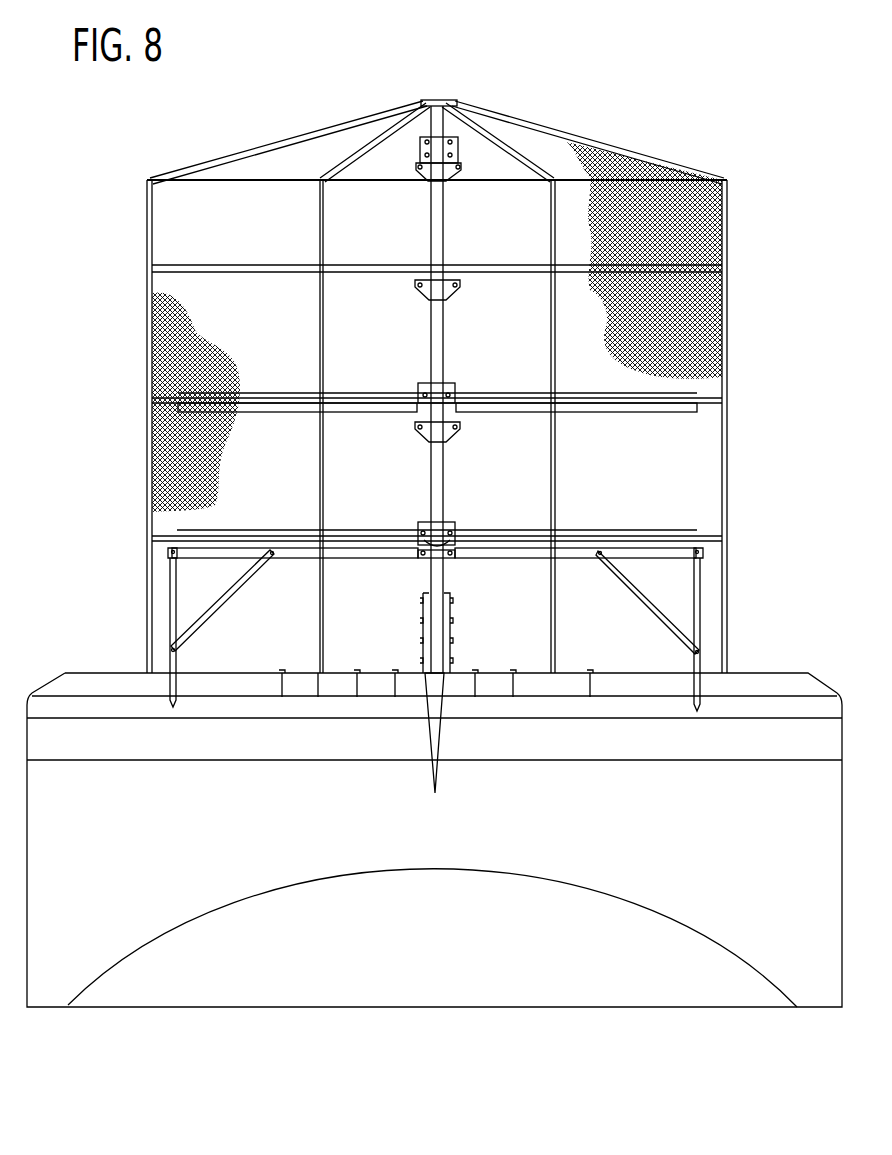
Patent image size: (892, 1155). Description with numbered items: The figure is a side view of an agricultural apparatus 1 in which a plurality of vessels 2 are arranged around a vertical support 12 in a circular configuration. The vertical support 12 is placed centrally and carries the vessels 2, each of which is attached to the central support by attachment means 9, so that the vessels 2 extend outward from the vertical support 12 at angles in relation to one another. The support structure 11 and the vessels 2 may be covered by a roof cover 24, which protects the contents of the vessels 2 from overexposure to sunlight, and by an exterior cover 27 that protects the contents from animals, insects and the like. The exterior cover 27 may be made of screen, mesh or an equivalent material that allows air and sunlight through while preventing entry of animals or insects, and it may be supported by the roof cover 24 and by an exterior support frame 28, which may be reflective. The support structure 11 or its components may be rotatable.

The agricultural apparatus 1 is at (471, 379).
The vessel 2 is at (617, 413).
The attachment means 9 is at (433, 388).
The support structure 11 is at (454, 237).
The vertical support 12 is at (472, 386).
The roof cover 24 is at (528, 123).
The exterior cover 27 is at (702, 242).
The exterior support frame 28 is at (727, 435).